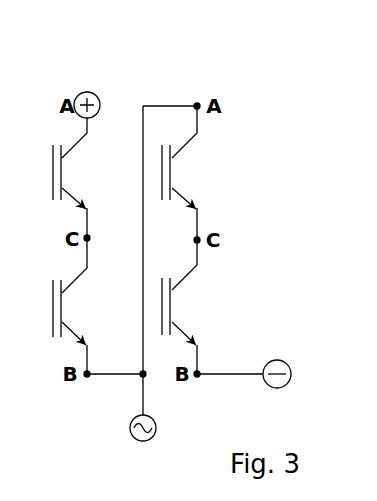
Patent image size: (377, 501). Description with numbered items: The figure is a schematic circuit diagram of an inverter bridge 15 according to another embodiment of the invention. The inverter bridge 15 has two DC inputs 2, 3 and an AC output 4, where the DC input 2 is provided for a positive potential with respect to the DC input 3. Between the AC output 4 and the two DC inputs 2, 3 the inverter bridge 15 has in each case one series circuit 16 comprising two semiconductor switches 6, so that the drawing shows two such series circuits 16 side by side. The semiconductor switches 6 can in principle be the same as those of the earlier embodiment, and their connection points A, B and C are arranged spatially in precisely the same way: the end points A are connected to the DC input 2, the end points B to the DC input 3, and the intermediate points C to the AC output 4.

The DC input 2 is at (93, 94).
The DC input 3 is at (288, 364).
The AC output 4 is at (153, 436).
The semiconductor switch 6 is at (70, 132).
The inverter bridge 15 is at (182, 72).
The series circuit 16 is at (233, 85).